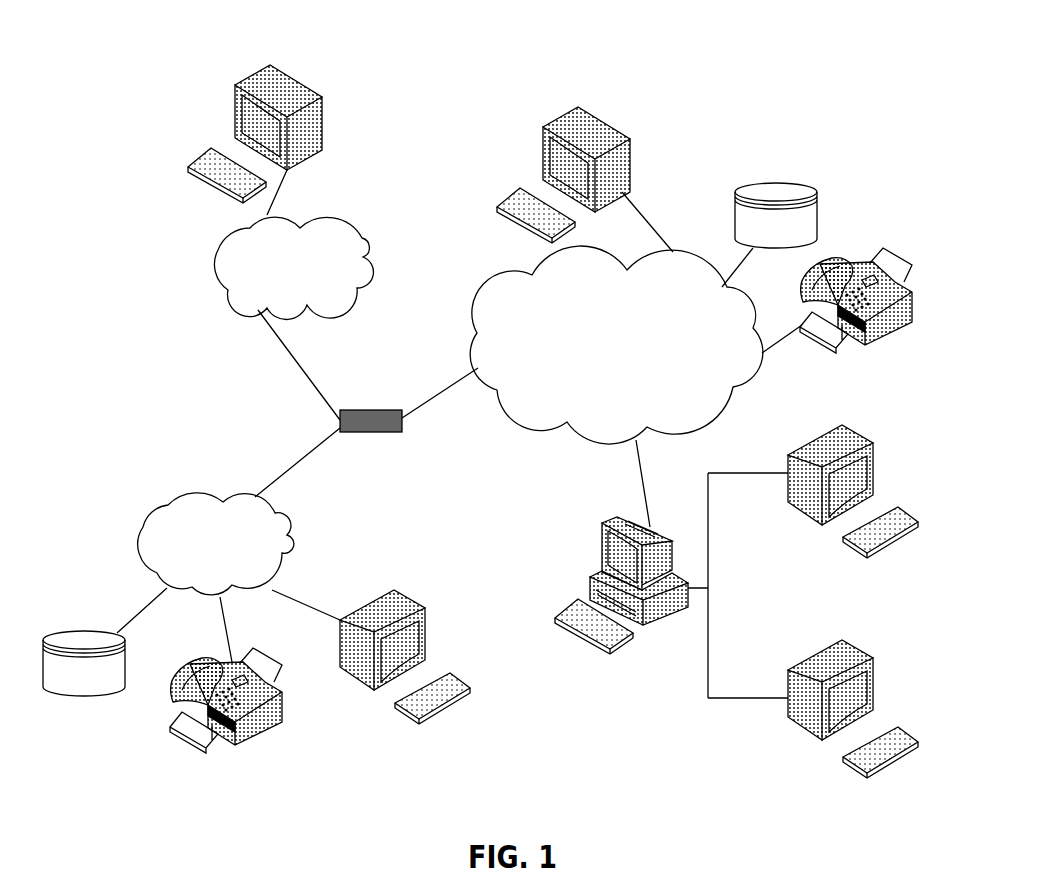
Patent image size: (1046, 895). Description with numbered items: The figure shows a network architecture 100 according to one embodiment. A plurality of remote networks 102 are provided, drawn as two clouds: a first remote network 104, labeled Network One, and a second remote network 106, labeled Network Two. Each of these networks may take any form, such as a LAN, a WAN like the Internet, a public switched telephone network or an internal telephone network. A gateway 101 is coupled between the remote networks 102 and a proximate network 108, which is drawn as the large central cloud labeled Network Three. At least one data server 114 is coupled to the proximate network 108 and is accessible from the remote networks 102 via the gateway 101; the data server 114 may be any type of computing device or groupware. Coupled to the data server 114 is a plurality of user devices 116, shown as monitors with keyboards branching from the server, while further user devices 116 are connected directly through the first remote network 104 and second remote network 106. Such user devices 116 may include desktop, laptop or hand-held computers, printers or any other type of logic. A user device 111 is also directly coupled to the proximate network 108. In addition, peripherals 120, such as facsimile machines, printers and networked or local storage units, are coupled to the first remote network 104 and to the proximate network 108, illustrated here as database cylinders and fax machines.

The architecture 100 is at (176, 52).
The gateway 101 is at (353, 408).
The remote networks 102 is at (202, 323).
The first remote network 104 is at (142, 520).
The second remote network 106 is at (363, 240).
The proximate network 108 is at (722, 412).
The user device 111 is at (630, 140).
The data server 114 is at (602, 542).
The user devices 116 is at (322, 107).
The peripheral 120 is at (820, 192).